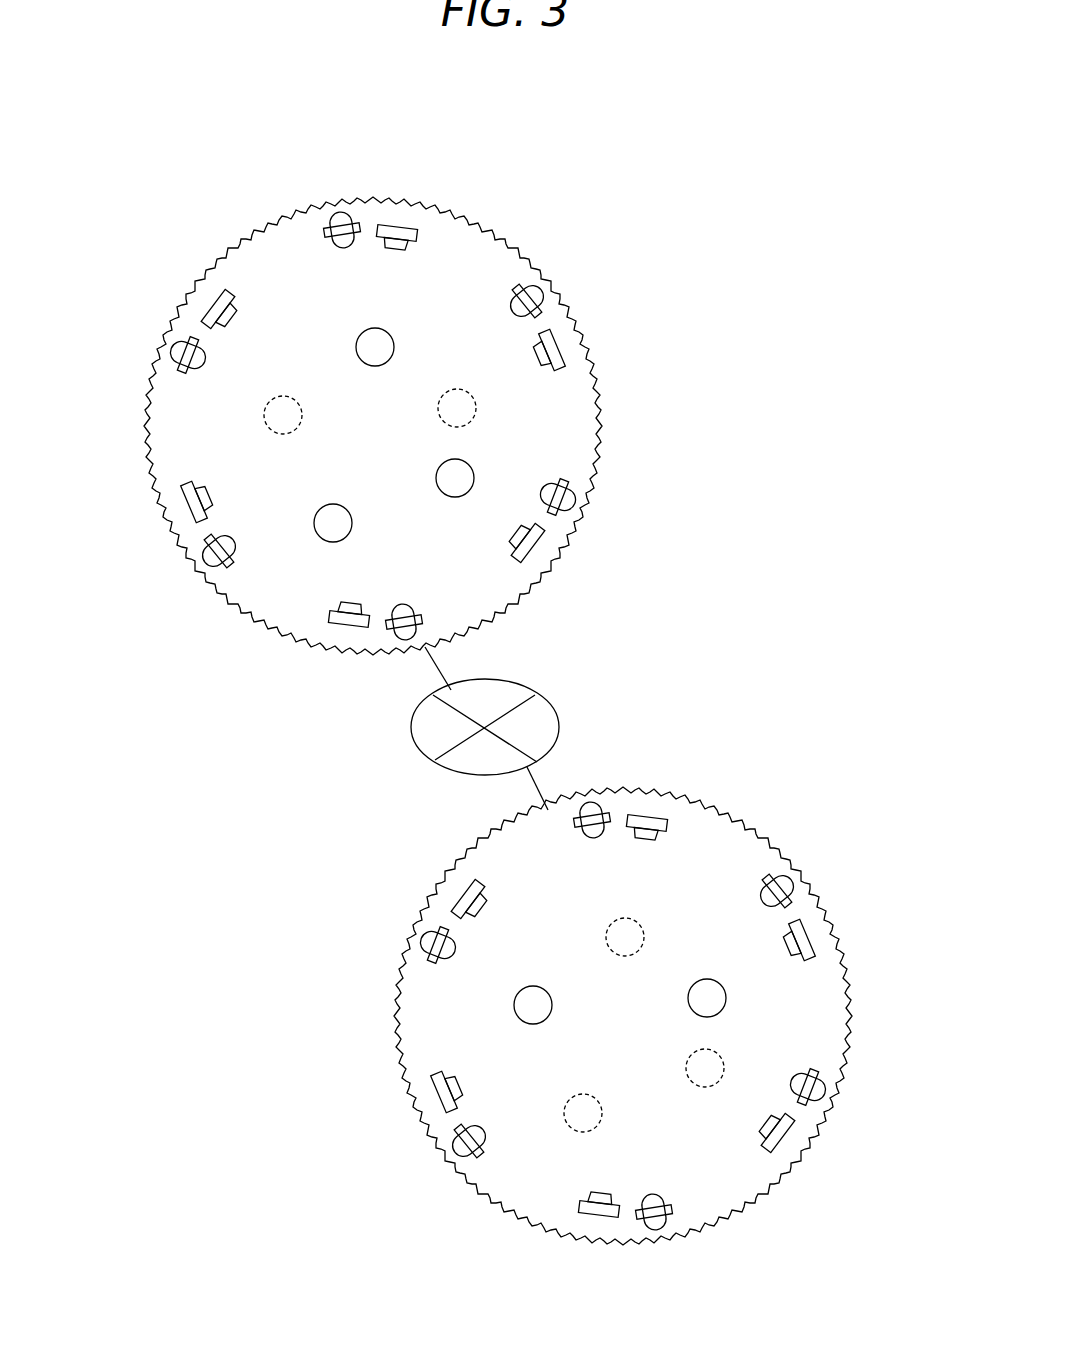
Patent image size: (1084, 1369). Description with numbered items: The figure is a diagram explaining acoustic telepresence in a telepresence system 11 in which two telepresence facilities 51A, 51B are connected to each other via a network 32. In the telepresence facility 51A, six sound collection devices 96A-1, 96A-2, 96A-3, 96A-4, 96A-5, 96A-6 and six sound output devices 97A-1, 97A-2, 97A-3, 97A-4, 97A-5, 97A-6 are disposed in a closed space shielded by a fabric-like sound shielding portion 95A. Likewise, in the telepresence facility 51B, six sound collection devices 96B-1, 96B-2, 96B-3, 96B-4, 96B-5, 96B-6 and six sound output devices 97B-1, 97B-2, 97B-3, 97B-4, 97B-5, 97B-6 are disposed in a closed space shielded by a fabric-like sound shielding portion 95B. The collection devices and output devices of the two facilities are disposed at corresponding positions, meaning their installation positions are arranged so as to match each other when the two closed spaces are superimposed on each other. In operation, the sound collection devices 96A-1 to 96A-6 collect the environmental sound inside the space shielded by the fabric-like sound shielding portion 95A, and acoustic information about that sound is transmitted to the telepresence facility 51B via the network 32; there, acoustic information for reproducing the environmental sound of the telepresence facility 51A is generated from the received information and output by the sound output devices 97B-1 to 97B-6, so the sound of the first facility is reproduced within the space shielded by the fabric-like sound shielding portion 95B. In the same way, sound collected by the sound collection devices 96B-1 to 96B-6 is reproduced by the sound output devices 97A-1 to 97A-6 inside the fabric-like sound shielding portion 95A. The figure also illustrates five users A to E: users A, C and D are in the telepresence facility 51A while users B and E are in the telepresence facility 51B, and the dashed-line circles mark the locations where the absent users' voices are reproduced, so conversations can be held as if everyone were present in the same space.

The telepresence system 11 is at (750, 592).
The network 32 is at (418, 742).
The telepresence facility 51A is at (373, 409).
The telepresence facility 51B is at (624, 1019).
The fabric-like sound shielding portion 95A is at (512, 245).
The fabric-like sound shielding portion 95B is at (623, 1016).
The sound collection device 96A-1 is at (343, 212).
The sound collection device 96A-2 is at (545, 296).
The sound collection device 96A-3 is at (576, 505).
The sound collection device 96A-4 is at (418, 612).
The sound collection device 96A-5 is at (204, 560).
The sound collection device 96A-6 is at (176, 345).
The sound output device 97A-1 is at (398, 226).
The sound output device 97A-2 is at (568, 342).
The sound output device 97A-3 is at (550, 556).
The sound output device 97A-4 is at (349, 632).
The sound output device 97A-5 is at (180, 510).
The sound output device 97A-6 is at (202, 296).
The sound collection device 96B-1 is at (609, 775).
The sound collection device 96B-2 is at (829, 884).
The sound collection device 96B-3 is at (854, 1095).
The sound collection device 96B-4 is at (662, 1242).
The sound collection device 96B-5 is at (418, 1148).
The sound collection device 96B-6 is at (393, 938).
The sound output device 97B-1 is at (660, 793).
The sound output device 97B-2 is at (851, 934).
The sound output device 97B-3 is at (831, 1143).
The sound output device 97B-4 is at (612, 1260).
The sound output device 97B-5 is at (396, 1099).
The sound output device 97B-6 is at (417, 888).